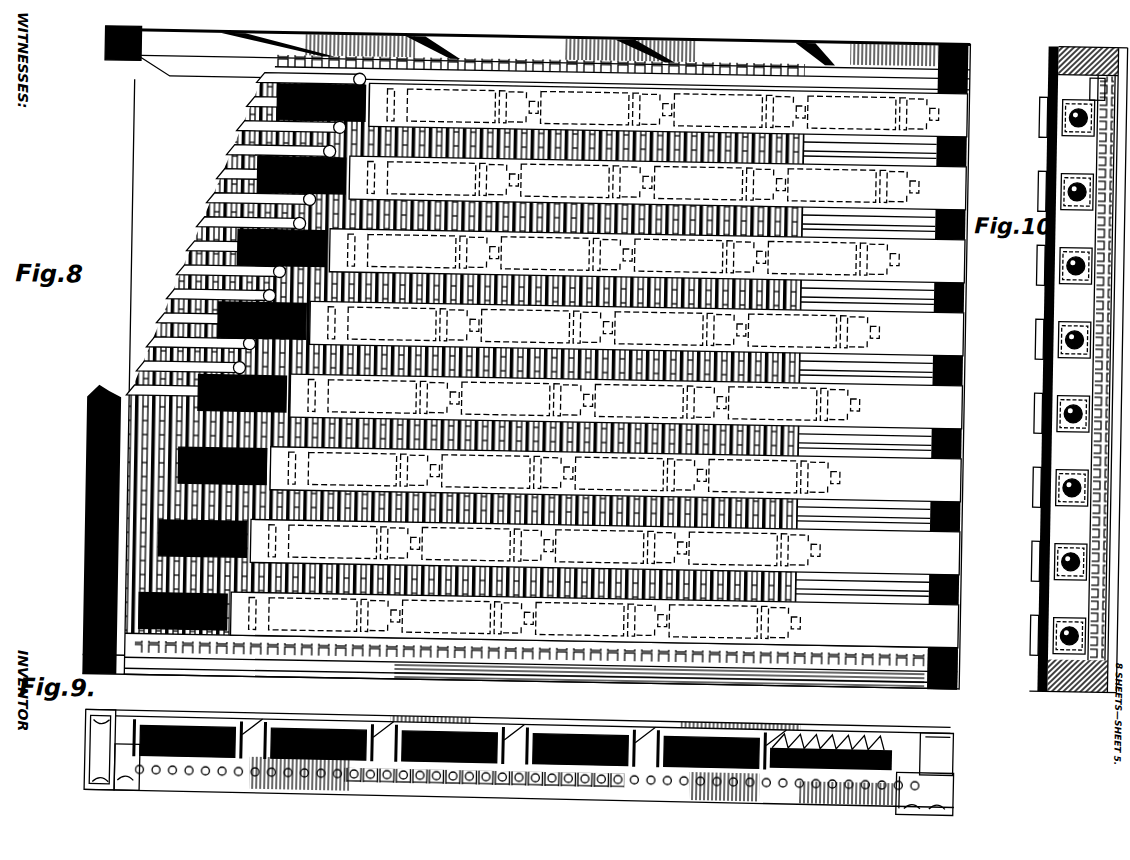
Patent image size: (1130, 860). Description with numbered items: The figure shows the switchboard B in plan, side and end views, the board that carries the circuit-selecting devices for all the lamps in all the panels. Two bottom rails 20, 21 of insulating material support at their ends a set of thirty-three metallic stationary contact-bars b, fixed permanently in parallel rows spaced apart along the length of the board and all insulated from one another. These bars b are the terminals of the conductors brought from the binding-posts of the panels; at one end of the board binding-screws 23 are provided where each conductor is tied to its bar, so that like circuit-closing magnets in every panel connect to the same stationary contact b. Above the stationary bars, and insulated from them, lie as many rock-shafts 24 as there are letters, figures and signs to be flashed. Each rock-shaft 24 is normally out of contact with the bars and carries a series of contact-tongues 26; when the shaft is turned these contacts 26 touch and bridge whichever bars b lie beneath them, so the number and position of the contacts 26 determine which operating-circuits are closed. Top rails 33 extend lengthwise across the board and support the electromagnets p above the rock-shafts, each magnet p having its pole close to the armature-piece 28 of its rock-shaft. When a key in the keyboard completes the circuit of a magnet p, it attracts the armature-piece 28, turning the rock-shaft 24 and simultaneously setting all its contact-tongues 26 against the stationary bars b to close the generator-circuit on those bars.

In FIG. 9, the top rails 33 is at (478, 724).
In FIG. 10, the top rails 33 is at (1051, 376).
In FIG. 8, the binding-screws 23 is at (216, 173).
In FIG. 9, the stationary contact-bars b is at (444, 786).
In FIG. 10, the stationary contact-bars b is at (1100, 180).
In FIG. 8, the electromagnet p is at (290, 86).
In FIG. 9, the electromagnet p is at (180, 735).
In FIG. 10, the electromagnet p is at (1080, 136).
In FIG. 8, the switchboard B is at (77, 529).
In FIG. 8, the bottom rail 20 is at (113, 672).
In FIG. 9, the bottom rail 20 is at (112, 759).
In FIG. 8, the bottom rail 21 is at (930, 680).
In FIG. 9, the bottom rail 21 is at (861, 781).
In FIG. 9, the rock-shaft 24 is at (292, 786).
In FIG. 10, the rock-shaft 24 is at (1090, 92).
In FIG. 9, the contact-tongues 26 is at (416, 786).
In FIG. 10, the contact-tongues 26 is at (1068, 680).
In FIG. 9, the armature-piece 28 is at (132, 750).